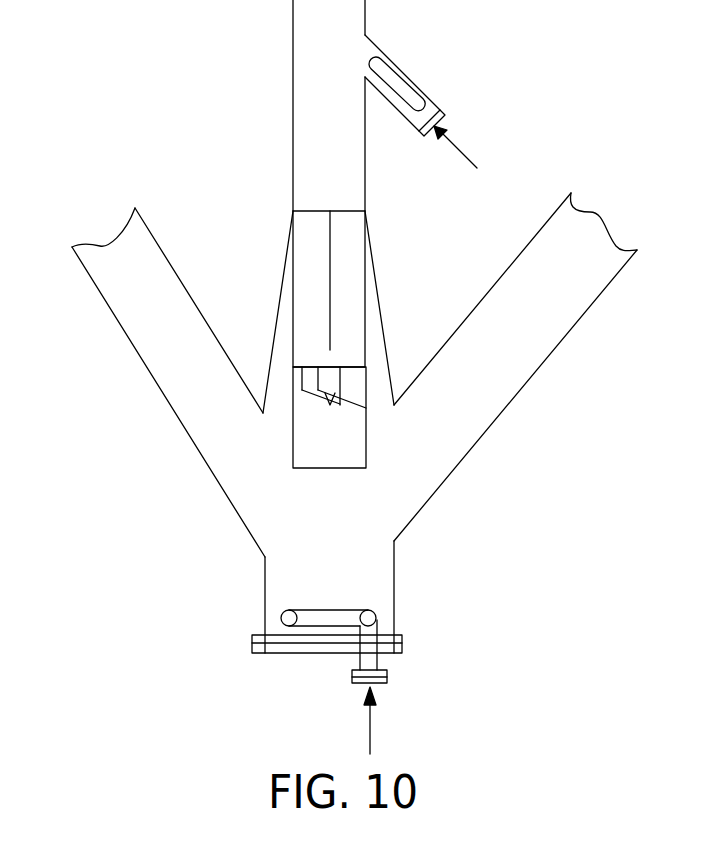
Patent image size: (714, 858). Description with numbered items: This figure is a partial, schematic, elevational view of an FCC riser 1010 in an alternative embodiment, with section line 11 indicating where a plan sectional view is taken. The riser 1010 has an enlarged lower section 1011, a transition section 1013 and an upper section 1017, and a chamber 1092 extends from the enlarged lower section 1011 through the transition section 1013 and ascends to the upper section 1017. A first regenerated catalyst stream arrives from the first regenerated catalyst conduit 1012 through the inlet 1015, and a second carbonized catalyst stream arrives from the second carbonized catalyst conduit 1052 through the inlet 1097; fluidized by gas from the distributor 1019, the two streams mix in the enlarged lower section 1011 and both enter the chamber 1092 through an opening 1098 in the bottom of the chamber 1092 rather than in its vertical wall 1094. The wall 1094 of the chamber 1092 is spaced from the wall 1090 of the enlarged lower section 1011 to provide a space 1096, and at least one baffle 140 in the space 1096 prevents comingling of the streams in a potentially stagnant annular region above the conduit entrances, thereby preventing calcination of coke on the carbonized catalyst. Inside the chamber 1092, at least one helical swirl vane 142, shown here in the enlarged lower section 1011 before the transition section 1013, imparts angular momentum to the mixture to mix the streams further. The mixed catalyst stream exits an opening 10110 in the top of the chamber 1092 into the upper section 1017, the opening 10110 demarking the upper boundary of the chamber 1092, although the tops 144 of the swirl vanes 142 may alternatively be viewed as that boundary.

The riser 1010 is at (178, 104).
The upper section 1017 is at (293, 60).
The opening 10110 is at (320, 210).
The segment 11- 11 is at (182, 140).
The baffle 140 is at (330, 233).
The tops of the swirl vanes 144 is at (343, 367).
The transition section 1013 is at (272, 318).
The first regenerated catalyst conduit 1012 is at (122, 329).
The second carbonized catalyst conduit 1052 is at (487, 422).
The enlarged lower section 1011 is at (265, 583).
The distributor 1019 is at (307, 627).
The chamber 1092 is at (293, 385).
The wall of the enlarged lower section 1090 is at (390, 367).
The vertical wall 1094 is at (367, 388).
The inlet 1097 is at (392, 475).
The helical swirl vane 142 is at (333, 405).
The opening 1098 is at (338, 468).
The inlet 1015 is at (253, 452).
The space 1096 is at (280, 400).